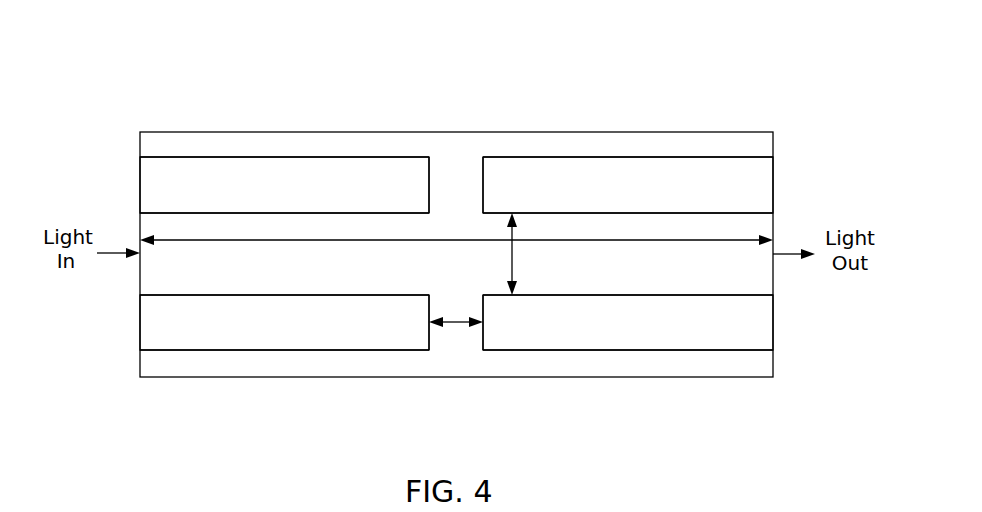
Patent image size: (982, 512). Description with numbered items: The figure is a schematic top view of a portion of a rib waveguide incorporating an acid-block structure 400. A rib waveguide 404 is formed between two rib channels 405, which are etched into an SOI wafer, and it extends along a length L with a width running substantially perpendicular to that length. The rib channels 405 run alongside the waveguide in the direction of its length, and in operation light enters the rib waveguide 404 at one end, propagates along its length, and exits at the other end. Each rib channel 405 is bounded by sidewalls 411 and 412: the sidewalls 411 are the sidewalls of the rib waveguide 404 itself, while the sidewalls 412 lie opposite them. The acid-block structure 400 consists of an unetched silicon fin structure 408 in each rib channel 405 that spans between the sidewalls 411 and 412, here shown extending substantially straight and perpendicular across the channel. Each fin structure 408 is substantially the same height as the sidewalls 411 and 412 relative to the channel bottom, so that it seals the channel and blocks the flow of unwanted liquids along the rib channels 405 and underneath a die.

The acid-block structure 400 is at (474, 128).
The rib waveguide 404 is at (402, 267).
The rib channel 405 is at (237, 185).
The fin structure 408 is at (443, 170).
The sidewall 411 is at (332, 213).
The sidewall 412 is at (263, 157).